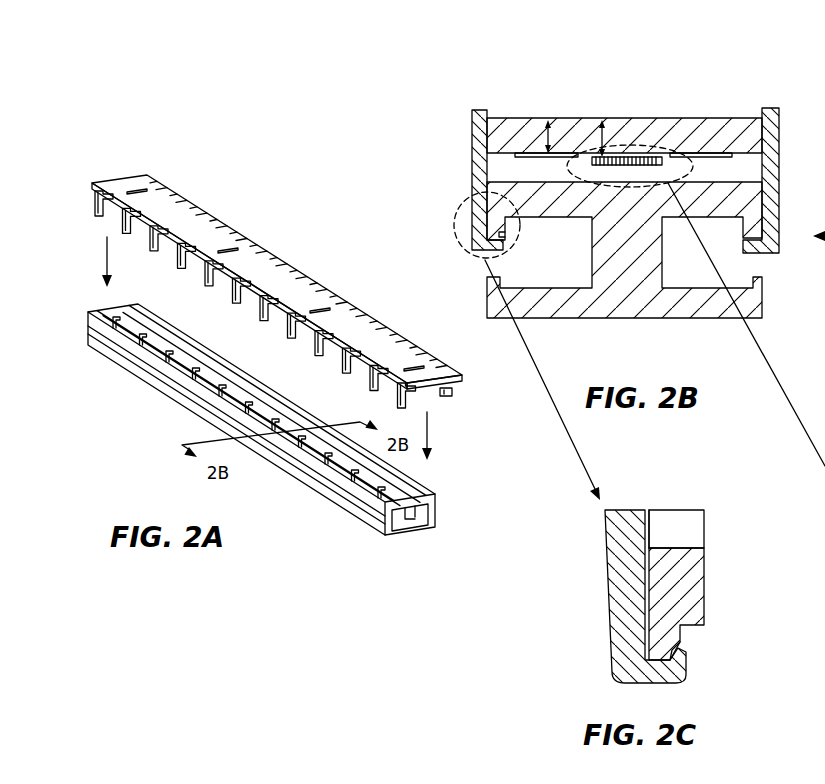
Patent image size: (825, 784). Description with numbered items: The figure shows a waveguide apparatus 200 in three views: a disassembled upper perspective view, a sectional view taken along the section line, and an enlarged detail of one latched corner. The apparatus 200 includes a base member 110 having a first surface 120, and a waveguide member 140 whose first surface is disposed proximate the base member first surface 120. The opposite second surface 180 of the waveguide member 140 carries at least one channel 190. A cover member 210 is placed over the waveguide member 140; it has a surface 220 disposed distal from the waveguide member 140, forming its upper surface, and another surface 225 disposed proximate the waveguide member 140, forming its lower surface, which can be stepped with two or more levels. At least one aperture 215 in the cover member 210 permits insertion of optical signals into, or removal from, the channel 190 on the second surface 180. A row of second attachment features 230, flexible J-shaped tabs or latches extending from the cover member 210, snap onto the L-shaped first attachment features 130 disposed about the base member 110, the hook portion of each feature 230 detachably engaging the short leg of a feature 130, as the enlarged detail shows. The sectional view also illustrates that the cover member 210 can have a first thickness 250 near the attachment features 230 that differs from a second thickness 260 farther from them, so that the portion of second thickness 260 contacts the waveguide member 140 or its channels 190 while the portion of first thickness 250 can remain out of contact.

In FIG. 2A, the waveguide apparatus 200 is at (280, 221).
In FIG. 2A, the cover member 210 is at (168, 188).
In FIG. 2A, the aperture 215 is at (332, 297).
In FIG. 2A, the surface 220 is at (283, 285).
In FIG. 2A, the surface 225 is at (440, 395).
In FIG. 2A, the second attachment feature 230 is at (95, 207).
In FIG. 2B, the second attachment feature 230 is at (474, 166).
In FIG. 2C, the second attachment feature 230 is at (607, 583).
In FIG. 2B, the base member 110 is at (608, 296).
In FIG. 2C, the base member 110 is at (674, 588).
In FIG. 2B, the first surface 120 is at (745, 193).
In FIG. 2B, the first attachment feature 130 is at (500, 224).
In FIG. 2C, the first attachment feature 130 is at (681, 638).
In FIG. 2B, the waveguide member 140 is at (702, 167).
In FIG. 2C, the waveguide member 140 is at (677, 530).
In FIG. 2B, the second surface 180 is at (503, 160).
In FIG. 2B, the channel 190 is at (630, 156).
In FIG. 2B, the first thickness 250 is at (545, 142).
In FIG. 2B, the second thickness 260 is at (598, 142).